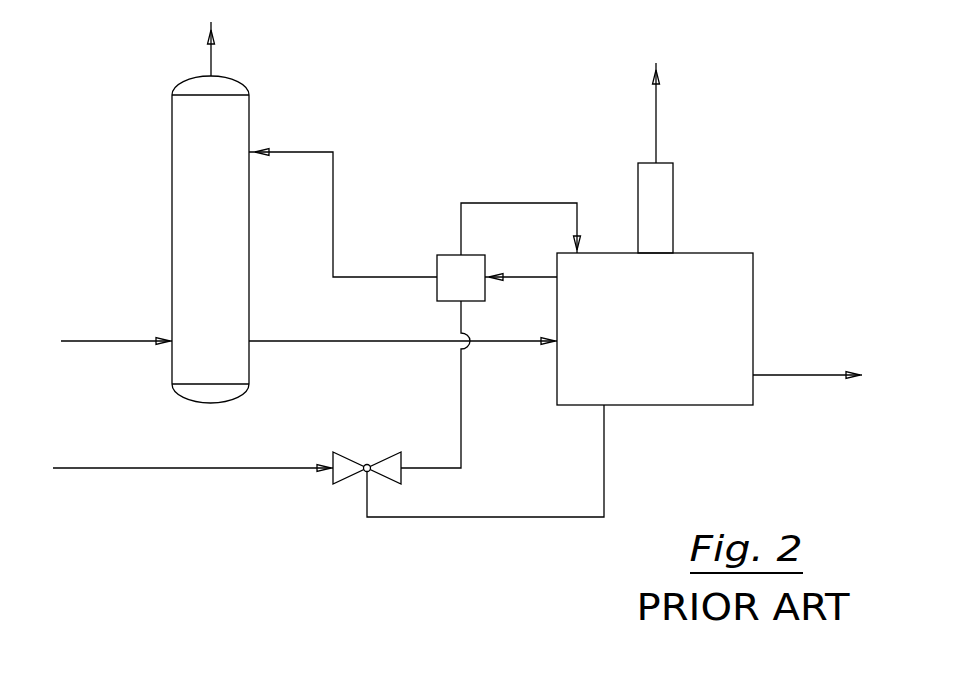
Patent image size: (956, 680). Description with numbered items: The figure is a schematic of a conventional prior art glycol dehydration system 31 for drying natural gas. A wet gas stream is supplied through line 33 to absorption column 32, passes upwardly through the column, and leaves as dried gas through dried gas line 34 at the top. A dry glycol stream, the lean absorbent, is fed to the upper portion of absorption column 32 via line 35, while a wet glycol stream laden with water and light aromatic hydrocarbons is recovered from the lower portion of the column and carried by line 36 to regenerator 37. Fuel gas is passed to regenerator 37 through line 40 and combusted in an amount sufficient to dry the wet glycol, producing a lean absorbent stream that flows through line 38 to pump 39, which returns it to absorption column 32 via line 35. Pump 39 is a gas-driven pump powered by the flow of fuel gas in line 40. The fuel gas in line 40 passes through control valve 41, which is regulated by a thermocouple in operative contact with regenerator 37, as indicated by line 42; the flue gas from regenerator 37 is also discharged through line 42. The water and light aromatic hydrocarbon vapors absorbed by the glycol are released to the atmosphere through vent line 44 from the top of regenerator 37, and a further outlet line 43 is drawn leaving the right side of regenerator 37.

The glycol dehydration system 31 is at (108, 93).
The absorption column 32 is at (172, 193).
The line 33 is at (110, 340).
The dried gas line 34 is at (211, 60).
The line 35 is at (333, 192).
The line 36 is at (292, 342).
The regenerator 37 is at (753, 292).
The line 38 is at (528, 275).
The pump 39 is at (447, 262).
The line 40 is at (523, 202).
The control valve 41 is at (345, 476).
The line 42 is at (604, 455).
The product line 43 is at (788, 380).
The vent line 44 is at (656, 119).